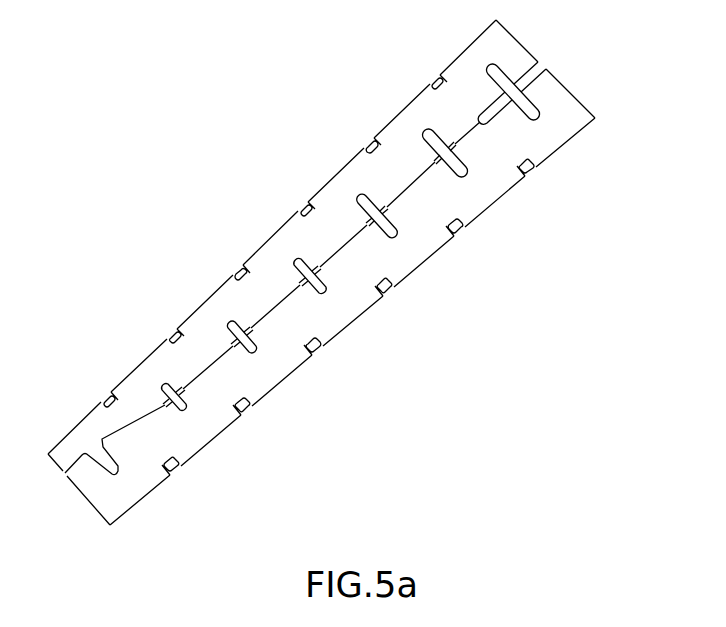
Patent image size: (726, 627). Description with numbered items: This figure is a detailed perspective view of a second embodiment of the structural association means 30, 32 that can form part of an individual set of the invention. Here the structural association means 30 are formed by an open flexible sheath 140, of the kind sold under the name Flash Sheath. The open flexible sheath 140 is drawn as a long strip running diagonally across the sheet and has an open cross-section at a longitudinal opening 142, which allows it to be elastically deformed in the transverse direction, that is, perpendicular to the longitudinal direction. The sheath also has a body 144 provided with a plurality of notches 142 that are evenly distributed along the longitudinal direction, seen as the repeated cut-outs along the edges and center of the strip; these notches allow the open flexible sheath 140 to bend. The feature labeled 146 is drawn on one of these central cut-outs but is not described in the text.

The structural association means 30 is at (354, 267).
The second strip 32 is at (274, 168).
The open flexible sheath 140 is at (434, 282).
The longitudinal opening 142 is at (468, 134).
The body 144 is at (273, 333).
The cut-out slot 146 is at (308, 286).